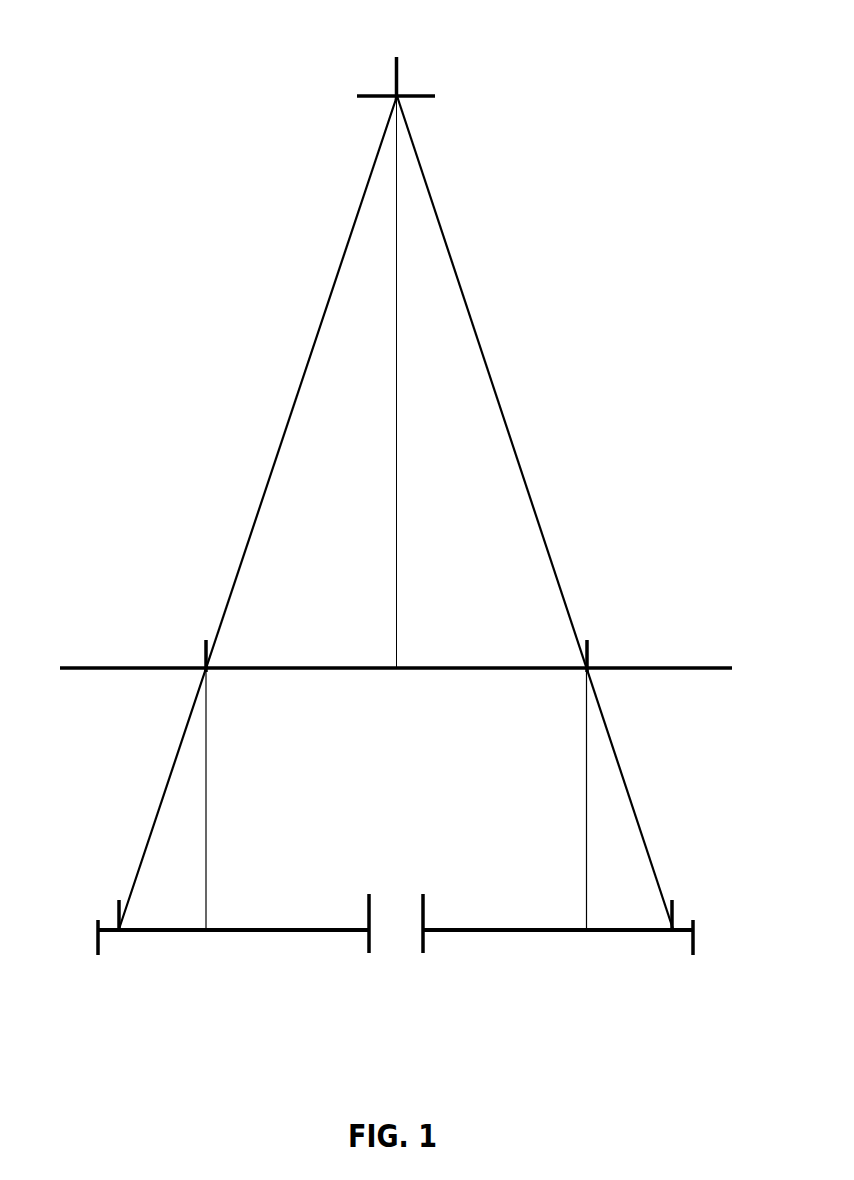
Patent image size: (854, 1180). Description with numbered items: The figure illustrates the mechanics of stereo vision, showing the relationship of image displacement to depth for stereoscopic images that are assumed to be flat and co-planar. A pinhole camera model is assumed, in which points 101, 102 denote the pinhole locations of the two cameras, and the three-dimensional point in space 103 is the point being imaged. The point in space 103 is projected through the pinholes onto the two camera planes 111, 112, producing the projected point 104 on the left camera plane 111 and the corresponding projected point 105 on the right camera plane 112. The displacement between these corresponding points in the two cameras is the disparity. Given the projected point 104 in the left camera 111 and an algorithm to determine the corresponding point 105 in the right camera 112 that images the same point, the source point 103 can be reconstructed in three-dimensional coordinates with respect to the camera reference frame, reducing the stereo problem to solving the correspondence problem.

The pinhole location 101 is at (198, 658).
The pinhole location 102 is at (595, 658).
The 3D point in space 103 is at (404, 90).
The projected point 104 is at (110, 918).
The projected point 105 is at (682, 918).
The left camera plane 111 is at (363, 987).
The right camera plane 112 is at (682, 987).